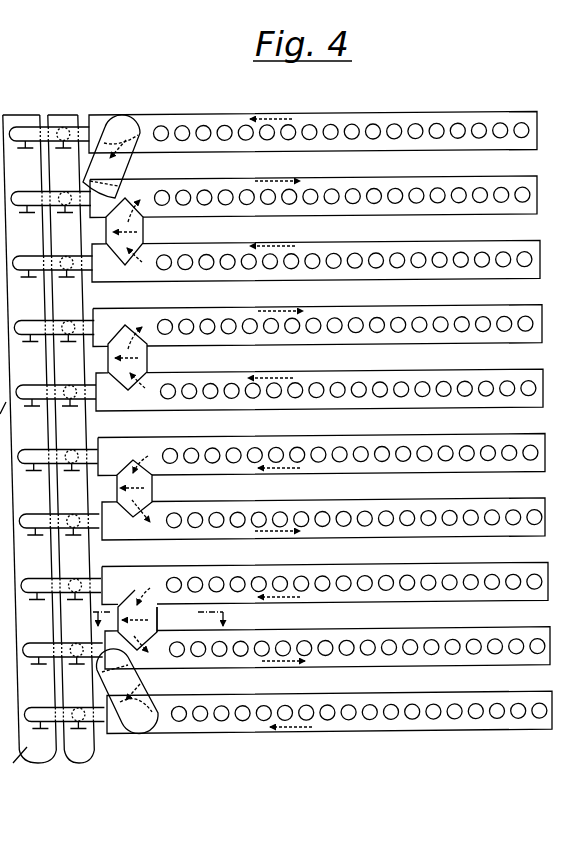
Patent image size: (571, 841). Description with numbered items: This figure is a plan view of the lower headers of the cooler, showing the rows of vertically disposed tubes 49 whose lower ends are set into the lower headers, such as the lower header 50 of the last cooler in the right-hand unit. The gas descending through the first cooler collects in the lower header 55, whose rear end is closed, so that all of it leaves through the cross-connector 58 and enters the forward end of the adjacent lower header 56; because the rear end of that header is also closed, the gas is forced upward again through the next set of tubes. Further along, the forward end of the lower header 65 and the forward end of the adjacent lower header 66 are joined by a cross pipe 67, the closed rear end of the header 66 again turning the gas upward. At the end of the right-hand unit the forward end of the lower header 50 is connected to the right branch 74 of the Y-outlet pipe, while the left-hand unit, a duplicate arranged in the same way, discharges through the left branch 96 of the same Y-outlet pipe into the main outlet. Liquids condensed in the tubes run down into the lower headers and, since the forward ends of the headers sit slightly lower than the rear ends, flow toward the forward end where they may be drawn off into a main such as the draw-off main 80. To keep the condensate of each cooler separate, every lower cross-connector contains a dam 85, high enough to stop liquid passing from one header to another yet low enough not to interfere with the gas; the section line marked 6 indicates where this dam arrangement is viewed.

The section line 6- 6 is at (158, 621).
The vertically disposed tubes 49 is at (456, 131).
The lower header 50 is at (528, 692).
The lower header 55 is at (532, 432).
The lower header 56 is at (532, 497).
The cross-connector 58 is at (152, 483).
The lower header 65 is at (527, 562).
The lower header 66 is at (530, 621).
The cross pipe 67 is at (157, 616).
The right branch of the Y-outlet pipe 74 is at (139, 684).
The draw-off main 80 is at (75, 750).
The dam 85 is at (133, 606).
The left branch of the Y-outlet pipe 96 is at (118, 165).